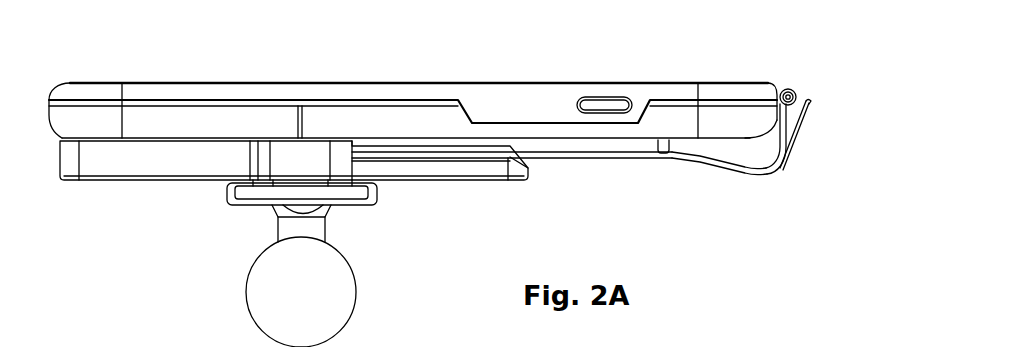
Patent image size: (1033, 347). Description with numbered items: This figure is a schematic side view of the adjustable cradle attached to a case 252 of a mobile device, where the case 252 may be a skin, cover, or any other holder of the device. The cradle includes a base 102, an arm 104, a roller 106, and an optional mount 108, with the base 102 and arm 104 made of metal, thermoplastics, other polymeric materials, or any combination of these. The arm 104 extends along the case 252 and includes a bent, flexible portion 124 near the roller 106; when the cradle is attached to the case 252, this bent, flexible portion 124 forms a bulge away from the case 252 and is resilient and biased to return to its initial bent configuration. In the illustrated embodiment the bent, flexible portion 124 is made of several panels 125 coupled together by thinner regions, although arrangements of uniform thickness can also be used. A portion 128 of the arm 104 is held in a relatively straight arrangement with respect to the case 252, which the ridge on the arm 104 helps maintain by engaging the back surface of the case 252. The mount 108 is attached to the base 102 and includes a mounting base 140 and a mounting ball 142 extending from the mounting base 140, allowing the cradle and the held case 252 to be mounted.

The base 102 is at (140, 175).
The arm 104 is at (572, 160).
The roller 106 is at (793, 87).
The mount 108 is at (378, 193).
The bent, flexible portion 124 is at (752, 192).
The panels 125 is at (777, 170).
The portion of the arm 128 is at (620, 160).
The mounting base 140 is at (227, 193).
The mounting ball 142 is at (325, 275).
The case 252 is at (578, 83).